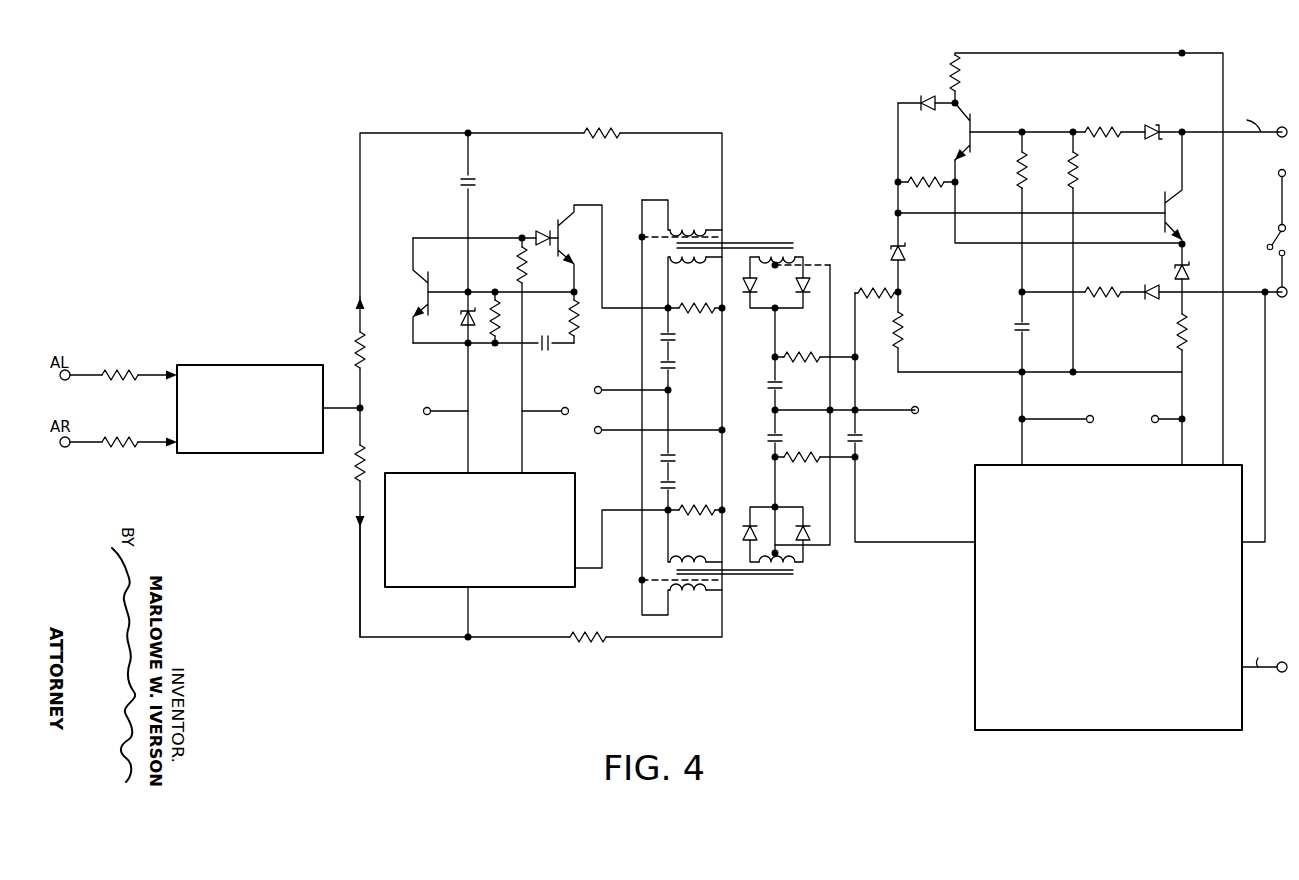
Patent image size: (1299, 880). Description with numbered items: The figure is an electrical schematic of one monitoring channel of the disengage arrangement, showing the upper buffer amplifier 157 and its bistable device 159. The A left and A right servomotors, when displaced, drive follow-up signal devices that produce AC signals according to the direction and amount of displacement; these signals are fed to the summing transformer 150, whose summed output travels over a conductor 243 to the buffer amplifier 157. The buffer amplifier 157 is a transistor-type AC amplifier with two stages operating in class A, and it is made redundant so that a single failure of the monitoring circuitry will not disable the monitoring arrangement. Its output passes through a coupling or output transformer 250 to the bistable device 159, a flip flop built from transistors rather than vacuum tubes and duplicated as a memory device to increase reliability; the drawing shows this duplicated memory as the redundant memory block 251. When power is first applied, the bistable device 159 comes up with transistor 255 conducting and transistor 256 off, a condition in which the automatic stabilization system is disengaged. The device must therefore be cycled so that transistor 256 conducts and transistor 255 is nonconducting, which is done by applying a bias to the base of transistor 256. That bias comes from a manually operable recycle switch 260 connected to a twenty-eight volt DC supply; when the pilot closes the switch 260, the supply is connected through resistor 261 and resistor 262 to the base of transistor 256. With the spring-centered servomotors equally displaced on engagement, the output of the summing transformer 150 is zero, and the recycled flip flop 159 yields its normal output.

The summing transformer 150 is at (255, 365).
The conductor 243 is at (347, 399).
The buffer amplifier 157 is at (323, 203).
The output transformer 250 is at (784, 238).
The bistable device 159 is at (852, 96).
The transistor 256 is at (1000, 111).
The resistor 262 is at (1030, 172).
The transistor 255 is at (1157, 207).
The resistor 261 is at (1108, 299).
The recycle switch 260 is at (1263, 240).
The redundant memory 251 is at (975, 590).